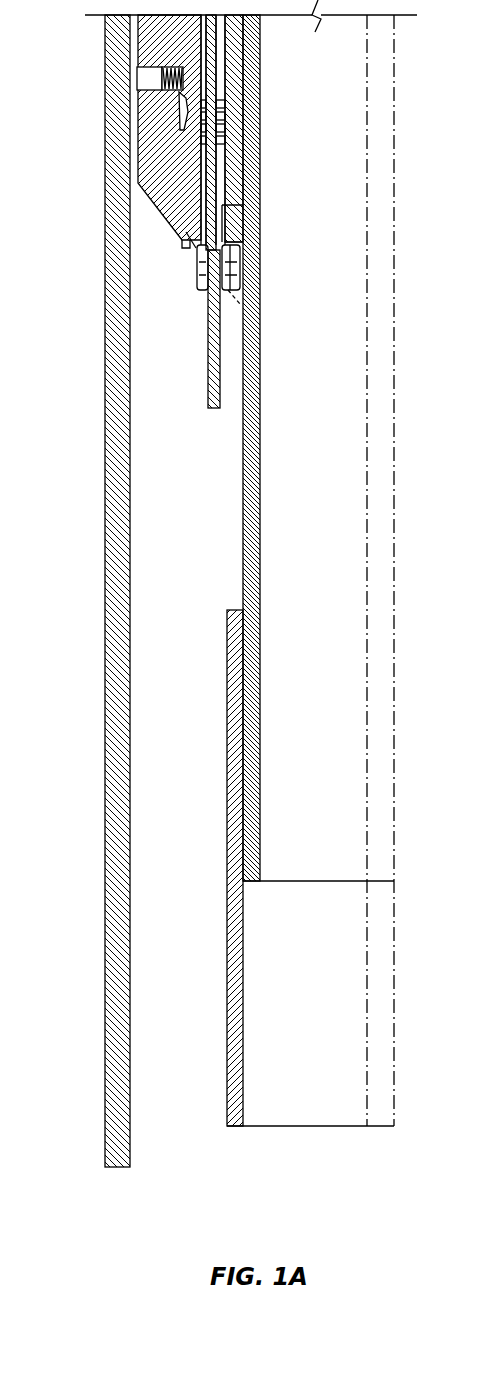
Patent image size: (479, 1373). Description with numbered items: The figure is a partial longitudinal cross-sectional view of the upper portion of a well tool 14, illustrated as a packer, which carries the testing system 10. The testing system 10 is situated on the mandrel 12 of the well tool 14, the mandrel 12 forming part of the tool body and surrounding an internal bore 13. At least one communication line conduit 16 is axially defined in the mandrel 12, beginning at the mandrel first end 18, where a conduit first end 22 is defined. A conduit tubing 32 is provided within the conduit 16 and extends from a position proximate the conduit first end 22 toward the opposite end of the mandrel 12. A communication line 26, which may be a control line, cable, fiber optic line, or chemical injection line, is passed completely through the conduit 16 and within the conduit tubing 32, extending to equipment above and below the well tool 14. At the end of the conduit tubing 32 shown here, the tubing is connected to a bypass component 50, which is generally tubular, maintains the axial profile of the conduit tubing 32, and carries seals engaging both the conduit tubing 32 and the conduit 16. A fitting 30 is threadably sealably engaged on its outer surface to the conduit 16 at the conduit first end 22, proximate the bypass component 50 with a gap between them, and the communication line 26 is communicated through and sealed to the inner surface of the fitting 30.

The testing system 10 is at (97, 204).
The mandrel 12 is at (190, 247).
The internal bore 13 is at (335, 106).
The well tool 14 is at (196, 340).
The communication line conduit 16 is at (231, 213).
The mandrel first end 18 is at (246, 883).
The conduit first end 22 is at (236, 222).
The communication line 26 is at (208, 385).
The fitting 30 is at (201, 256).
The conduit tubing 32 is at (227, 80).
The bypass component 50 is at (268, 282).